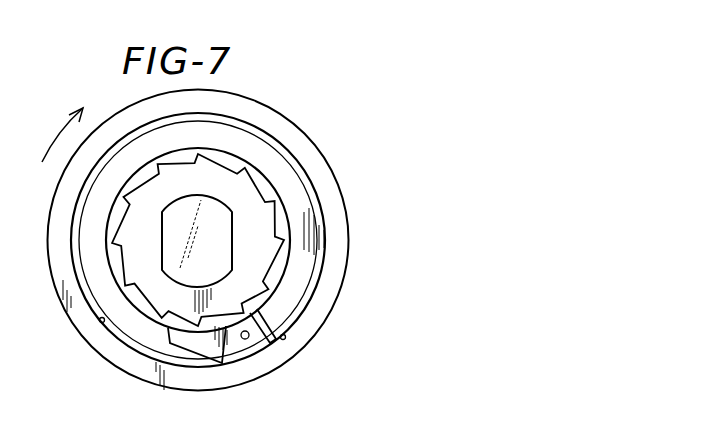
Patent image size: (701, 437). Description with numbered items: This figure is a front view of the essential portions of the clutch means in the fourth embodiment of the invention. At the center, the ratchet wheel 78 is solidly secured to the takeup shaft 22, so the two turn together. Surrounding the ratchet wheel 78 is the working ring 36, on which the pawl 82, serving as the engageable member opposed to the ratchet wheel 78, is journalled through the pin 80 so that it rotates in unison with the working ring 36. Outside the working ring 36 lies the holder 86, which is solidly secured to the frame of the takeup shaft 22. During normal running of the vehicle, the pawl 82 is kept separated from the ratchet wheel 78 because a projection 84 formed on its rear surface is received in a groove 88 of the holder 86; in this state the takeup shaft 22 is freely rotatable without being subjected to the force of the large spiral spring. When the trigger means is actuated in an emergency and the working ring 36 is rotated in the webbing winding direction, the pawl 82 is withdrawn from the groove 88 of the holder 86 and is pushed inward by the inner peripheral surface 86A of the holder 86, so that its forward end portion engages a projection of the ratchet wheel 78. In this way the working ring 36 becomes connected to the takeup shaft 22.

The takeup shaft 22 is at (227, 257).
The working ring 36 is at (308, 285).
The ratchet wheel 78 is at (270, 224).
The pin 80 is at (247, 340).
The pawl 82 is at (203, 356).
The projection 84 is at (270, 345).
The holder 86 is at (113, 358).
The inner peripheral surface 86A is at (100, 322).
The groove 88 is at (286, 338).